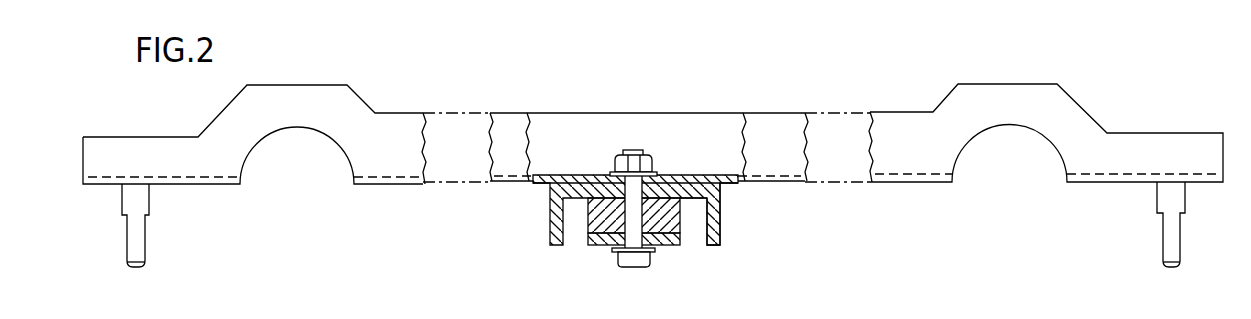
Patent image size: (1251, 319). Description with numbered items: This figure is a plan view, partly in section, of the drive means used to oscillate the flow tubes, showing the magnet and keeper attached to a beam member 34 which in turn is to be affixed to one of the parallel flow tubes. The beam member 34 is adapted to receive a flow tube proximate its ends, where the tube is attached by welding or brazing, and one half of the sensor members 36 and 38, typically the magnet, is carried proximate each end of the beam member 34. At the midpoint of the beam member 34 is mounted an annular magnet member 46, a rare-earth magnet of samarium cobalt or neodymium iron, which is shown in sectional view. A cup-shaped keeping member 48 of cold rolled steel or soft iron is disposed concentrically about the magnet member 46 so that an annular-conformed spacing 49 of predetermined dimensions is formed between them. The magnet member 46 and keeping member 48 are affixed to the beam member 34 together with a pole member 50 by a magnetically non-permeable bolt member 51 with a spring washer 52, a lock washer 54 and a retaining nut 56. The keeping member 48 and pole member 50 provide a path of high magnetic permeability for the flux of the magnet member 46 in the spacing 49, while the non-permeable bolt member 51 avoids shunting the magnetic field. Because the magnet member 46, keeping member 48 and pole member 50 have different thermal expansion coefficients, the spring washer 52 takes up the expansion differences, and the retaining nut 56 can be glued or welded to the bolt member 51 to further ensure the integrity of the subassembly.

The beam member 34 is at (778, 119).
The sensor member 36 is at (138, 247).
The sensor member 38 is at (1168, 242).
The magnet member 46 is at (670, 212).
The keeping member 48 is at (712, 237).
The annular-conformed spacing 49 is at (693, 233).
The pole member 50 is at (597, 241).
The bolt member 51 is at (649, 262).
The spring washer 52 is at (617, 253).
The lock washer 54 is at (652, 171).
The retaining nut 56 is at (614, 159).